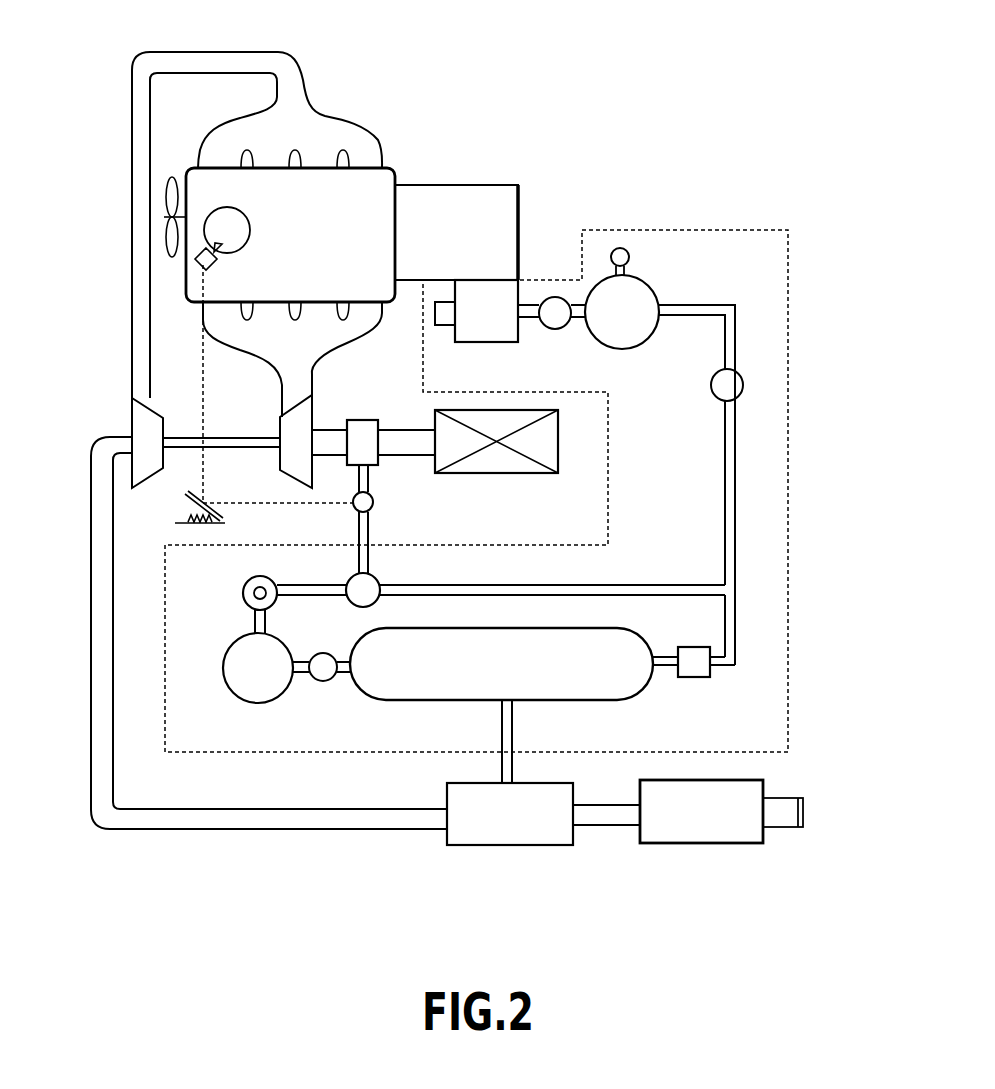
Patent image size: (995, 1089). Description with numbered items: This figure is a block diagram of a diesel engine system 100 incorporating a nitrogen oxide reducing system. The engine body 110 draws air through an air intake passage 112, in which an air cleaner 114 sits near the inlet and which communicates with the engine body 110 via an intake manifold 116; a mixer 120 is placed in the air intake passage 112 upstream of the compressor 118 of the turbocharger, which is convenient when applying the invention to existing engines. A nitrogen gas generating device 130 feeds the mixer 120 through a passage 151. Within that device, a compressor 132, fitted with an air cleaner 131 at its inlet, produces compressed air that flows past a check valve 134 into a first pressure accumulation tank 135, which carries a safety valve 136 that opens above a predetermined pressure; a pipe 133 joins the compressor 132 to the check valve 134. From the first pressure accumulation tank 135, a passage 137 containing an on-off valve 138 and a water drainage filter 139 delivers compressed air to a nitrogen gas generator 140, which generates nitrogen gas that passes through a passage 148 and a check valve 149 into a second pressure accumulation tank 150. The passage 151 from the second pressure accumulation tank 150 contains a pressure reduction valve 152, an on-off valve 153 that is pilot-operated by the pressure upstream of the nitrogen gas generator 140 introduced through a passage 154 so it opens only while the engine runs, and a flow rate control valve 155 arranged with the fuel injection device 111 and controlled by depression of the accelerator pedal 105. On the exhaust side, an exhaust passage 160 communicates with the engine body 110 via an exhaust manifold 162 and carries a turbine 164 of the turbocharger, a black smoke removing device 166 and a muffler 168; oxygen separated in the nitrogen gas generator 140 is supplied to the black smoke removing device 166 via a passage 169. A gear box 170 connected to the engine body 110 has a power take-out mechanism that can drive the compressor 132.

The diesel engine system 100 is at (664, 122).
The accelerator pedal 105 is at (172, 485).
The engine body 110 is at (292, 230).
The fuel injection device 111 is at (223, 263).
The air intake passage 112 is at (397, 440).
The air cleaner 114 is at (537, 472).
The intake manifold 116 is at (232, 337).
The compressor 118 is at (283, 452).
The mixer 120 is at (362, 420).
The nitrogen gas generating device 130 is at (742, 228).
The air cleaner 131 is at (437, 329).
The compressor 132 is at (493, 340).
The compressor output line 133 is at (582, 303).
The check valve 134 is at (553, 298).
The first pressure accumulation tank 135 is at (650, 283).
The safety valve 136 is at (620, 247).
The passage 137 is at (727, 302).
The on-off valve 138 is at (710, 385).
The water drainage filter 139 is at (693, 678).
The nitrogen gas generator 140 is at (378, 700).
The passage 148 is at (343, 655).
The check valve 149 is at (321, 682).
The second pressure accumulation tank 150 is at (242, 698).
The passage 151 is at (370, 527).
The pressure reduction valve 152 is at (242, 596).
The on-off valve 153 is at (374, 573).
The passage 154 is at (648, 583).
The flow rate control valve 155 is at (373, 500).
The exhaust passage 160 is at (132, 112).
The exhaust manifold 162 is at (330, 127).
The turbine 164 is at (140, 420).
The black smoke removing device 166 is at (511, 846).
The muffler 168 is at (720, 843).
The passage 169 is at (508, 726).
The gear box 170 is at (432, 251).